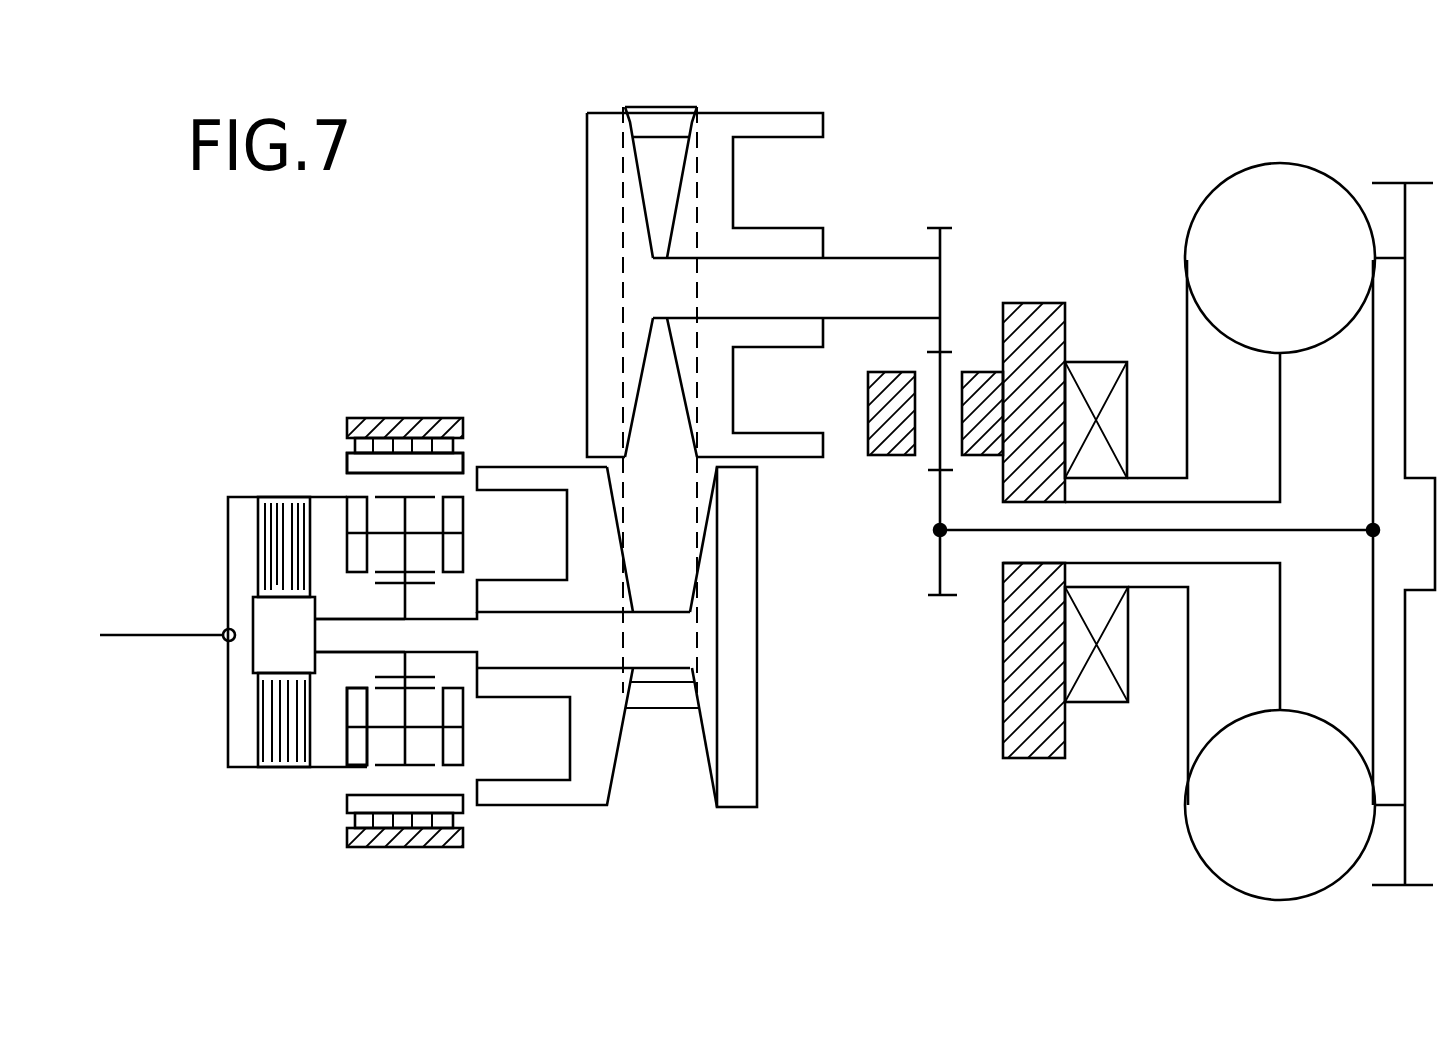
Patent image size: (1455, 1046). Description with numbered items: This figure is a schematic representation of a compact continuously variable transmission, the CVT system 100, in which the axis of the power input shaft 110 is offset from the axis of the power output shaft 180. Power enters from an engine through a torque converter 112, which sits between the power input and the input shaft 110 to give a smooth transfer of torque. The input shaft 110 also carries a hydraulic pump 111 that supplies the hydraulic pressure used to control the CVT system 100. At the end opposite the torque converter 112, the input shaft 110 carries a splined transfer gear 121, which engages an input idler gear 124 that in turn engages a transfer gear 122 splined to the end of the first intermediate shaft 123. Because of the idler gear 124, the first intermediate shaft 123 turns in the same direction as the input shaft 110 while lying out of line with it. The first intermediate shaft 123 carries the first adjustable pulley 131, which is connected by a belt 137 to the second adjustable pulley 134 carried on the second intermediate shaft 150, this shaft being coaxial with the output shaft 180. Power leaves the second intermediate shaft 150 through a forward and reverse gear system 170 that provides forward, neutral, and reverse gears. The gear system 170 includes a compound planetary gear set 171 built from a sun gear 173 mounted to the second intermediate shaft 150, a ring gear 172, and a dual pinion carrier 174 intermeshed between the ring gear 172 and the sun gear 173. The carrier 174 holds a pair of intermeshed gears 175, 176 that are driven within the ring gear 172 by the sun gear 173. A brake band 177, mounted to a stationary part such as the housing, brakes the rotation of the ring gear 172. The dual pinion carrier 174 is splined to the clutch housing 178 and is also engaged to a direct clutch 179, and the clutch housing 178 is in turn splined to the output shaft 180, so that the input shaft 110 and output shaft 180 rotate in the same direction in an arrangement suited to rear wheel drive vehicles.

The CVT system 100 is at (976, 118).
The power input shaft 110 is at (990, 535).
The hydraulic pump 111 is at (1090, 703).
The torque converter 112 is at (1321, 152).
The transfer gear 121 is at (932, 534).
The transfer gear 122 is at (943, 238).
The first intermediate shaft 123 is at (868, 272).
The input idler gear 124 is at (941, 360).
The first adjustable pulley 131 is at (543, 143).
The second adjustable pulley 134 is at (785, 701).
The belt 137 is at (668, 120).
The second intermediate shaft 150 is at (450, 637).
The forward and reverse gear system 170 is at (417, 378).
The compound planetary gear set 171 is at (258, 788).
The ring gear 172 is at (345, 462).
The sun gear 173 is at (392, 672).
The dual pinion carrier 174 is at (455, 517).
The intermeshed gear 175 is at (407, 553).
The intermeshed gear 176 is at (393, 702).
The brake band 177 is at (453, 447).
The clutch housing 178 is at (265, 500).
The direct clutch 179 is at (210, 522).
The power output shaft 180 is at (143, 633).